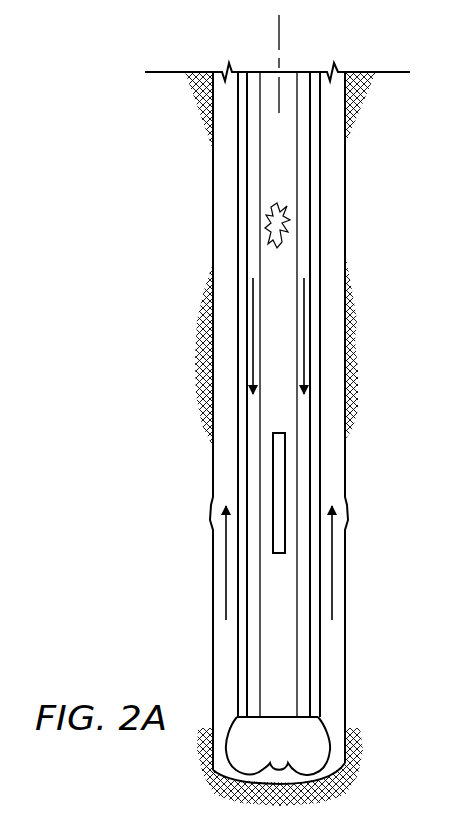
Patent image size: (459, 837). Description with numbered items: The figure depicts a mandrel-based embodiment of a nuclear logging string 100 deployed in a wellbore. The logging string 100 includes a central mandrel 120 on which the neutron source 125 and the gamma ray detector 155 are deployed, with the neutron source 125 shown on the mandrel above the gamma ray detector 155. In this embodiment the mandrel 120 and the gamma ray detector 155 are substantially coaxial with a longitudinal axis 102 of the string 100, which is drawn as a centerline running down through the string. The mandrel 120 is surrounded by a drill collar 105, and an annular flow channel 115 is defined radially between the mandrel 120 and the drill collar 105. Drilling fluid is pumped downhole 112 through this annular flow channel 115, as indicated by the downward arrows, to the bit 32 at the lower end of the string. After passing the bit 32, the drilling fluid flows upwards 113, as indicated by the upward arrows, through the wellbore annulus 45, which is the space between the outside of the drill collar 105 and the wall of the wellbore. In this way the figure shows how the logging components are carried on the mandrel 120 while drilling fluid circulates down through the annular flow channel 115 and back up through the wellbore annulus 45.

The nuclear logging string 100 is at (163, 162).
The longitudinal axis 102 is at (277, 43).
The drill collar 105 is at (237, 650).
The downhole pumping direction 112 is at (305, 350).
The upward flow direction 113 is at (333, 562).
The annular flow channel 115 is at (250, 560).
The central mandrel 120 is at (283, 152).
The neutron source 125 is at (268, 225).
The gamma ray detector 155 is at (278, 480).
The wellbore annulus 45 is at (333, 213).
The bit 32 is at (292, 752).